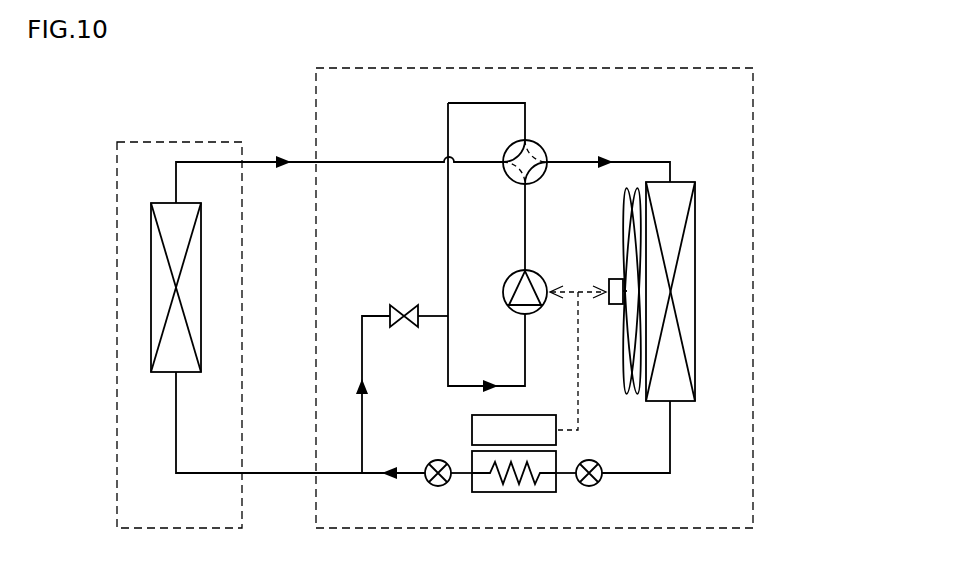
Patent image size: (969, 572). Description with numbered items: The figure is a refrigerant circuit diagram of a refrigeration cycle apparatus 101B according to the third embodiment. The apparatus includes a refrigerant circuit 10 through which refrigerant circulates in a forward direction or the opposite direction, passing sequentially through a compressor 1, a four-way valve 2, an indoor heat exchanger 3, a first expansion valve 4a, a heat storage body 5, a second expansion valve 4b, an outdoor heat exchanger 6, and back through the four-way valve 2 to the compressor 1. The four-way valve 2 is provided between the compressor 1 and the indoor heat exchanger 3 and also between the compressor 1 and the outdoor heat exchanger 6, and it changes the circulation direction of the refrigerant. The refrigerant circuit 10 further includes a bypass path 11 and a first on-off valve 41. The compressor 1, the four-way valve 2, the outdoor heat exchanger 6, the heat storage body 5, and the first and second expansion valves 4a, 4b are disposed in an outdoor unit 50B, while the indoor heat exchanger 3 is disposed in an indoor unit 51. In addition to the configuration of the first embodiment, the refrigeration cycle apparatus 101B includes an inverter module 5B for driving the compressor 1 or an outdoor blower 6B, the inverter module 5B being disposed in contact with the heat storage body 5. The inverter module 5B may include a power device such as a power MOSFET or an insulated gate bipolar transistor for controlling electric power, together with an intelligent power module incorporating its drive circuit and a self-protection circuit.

The refrigeration cycle apparatus 101B is at (150, 80).
The indoor unit 51 is at (208, 142).
The outdoor unit 50B is at (707, 68).
The refrigerant circuit 10 is at (386, 140).
The compressor 1 is at (541, 310).
The four-way valve 2 is at (543, 179).
The indoor heat exchanger 3 is at (202, 251).
The first expansion valve 4a is at (440, 487).
The second expansion valve 4b is at (590, 487).
The heat storage body 5 is at (519, 493).
The inverter module 5B is at (471, 430).
The outdoor heat exchanger 6 is at (697, 253).
The outdoor blower 6B is at (613, 278).
The bypass path 11 is at (373, 313).
The first on-off valve 41 is at (410, 325).